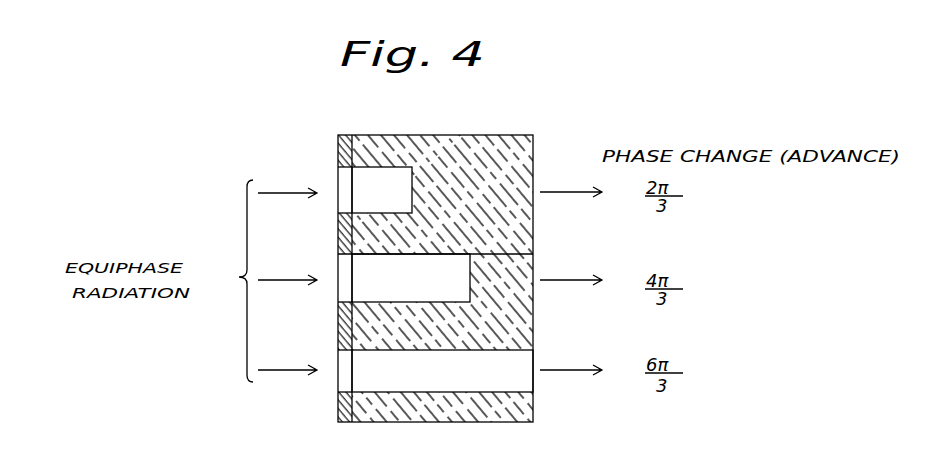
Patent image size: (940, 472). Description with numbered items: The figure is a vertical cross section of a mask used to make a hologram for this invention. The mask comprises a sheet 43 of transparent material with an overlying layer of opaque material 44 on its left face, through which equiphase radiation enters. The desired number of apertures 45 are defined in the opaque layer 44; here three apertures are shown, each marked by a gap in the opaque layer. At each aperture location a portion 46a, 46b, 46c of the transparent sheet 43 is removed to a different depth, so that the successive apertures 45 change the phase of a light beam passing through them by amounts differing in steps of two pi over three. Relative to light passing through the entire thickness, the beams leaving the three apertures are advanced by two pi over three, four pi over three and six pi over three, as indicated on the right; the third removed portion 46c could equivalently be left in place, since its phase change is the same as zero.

The sheet of transparent material 43 is at (457, 154).
The layer of opaque material 44 is at (338, 145).
The apertures 45 is at (351, 176).
The first removed portion of the transparent layer 46a is at (403, 199).
The second removed portion of the transparent layer 46b is at (412, 291).
The third removed portion of the transparent layer 46c is at (425, 384).